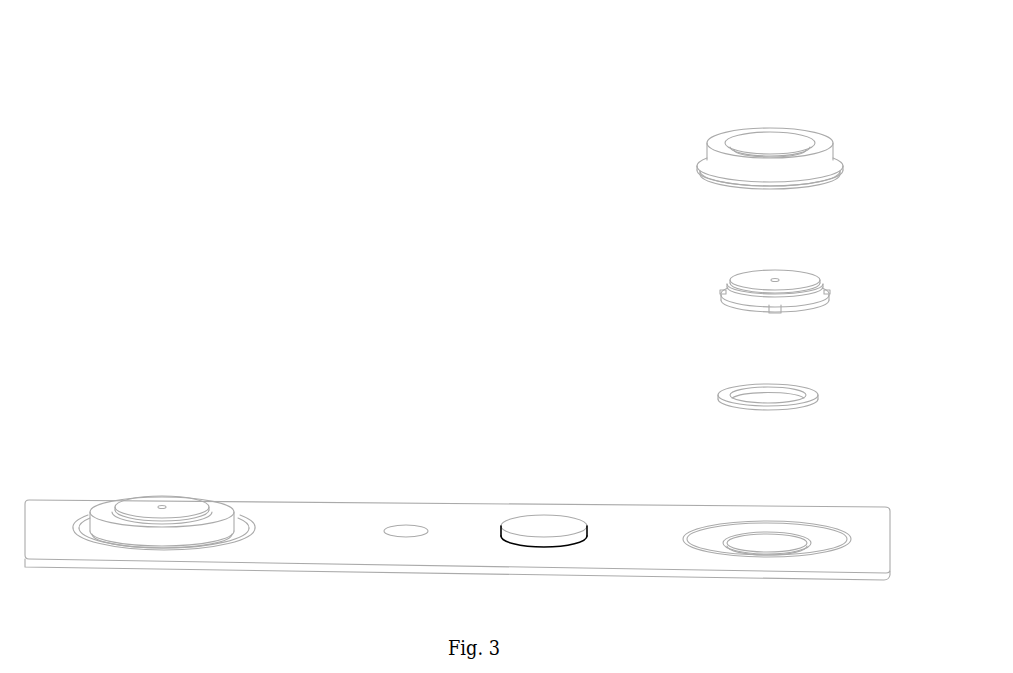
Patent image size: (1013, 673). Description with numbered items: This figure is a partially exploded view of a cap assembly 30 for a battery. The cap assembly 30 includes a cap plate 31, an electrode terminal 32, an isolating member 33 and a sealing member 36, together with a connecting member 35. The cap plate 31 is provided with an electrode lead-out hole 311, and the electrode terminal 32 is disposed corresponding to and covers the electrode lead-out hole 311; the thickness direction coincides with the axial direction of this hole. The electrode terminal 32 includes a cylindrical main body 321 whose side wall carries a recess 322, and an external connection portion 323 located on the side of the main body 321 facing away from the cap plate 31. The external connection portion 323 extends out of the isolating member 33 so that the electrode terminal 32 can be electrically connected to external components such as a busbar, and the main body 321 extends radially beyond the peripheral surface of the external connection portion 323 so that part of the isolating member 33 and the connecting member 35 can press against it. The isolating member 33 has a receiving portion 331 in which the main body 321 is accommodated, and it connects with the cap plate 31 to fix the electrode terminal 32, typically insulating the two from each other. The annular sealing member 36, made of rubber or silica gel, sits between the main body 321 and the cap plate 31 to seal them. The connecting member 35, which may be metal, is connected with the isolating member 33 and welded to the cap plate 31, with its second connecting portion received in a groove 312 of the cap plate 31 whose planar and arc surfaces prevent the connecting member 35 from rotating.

The cap assembly 30 is at (492, 43).
The cap plate 31 is at (355, 515).
The electrode lead-out hole 311 is at (770, 543).
The groove 312 is at (822, 543).
The electrode terminal 32 is at (520, 364).
The main body 321 is at (827, 305).
The recess 322 is at (833, 283).
The external connection portion 323 is at (745, 278).
The isolating member 33 is at (461, 290).
The receiving portion 331 is at (781, 138).
The connecting member 35 is at (840, 167).
The sealing member 36 is at (725, 385).